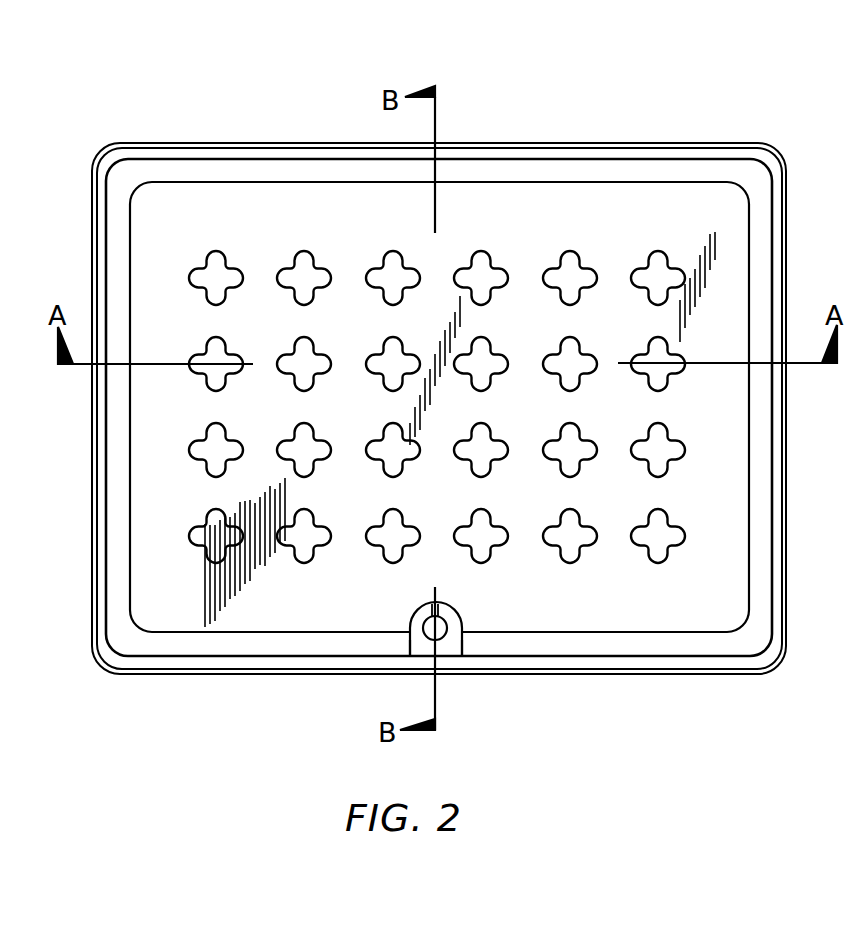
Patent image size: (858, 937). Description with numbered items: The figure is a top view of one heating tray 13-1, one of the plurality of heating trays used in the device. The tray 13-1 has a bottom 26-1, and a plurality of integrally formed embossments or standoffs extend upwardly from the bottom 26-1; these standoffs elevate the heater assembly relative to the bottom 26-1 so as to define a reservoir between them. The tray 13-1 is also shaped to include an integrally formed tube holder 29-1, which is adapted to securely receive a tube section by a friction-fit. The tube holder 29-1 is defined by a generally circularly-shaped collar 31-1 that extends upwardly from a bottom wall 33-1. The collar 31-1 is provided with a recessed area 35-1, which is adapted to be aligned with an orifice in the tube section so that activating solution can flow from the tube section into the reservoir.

The heating tray 13-1 is at (303, 116).
The bottom 26-1 is at (668, 598).
The tube holder 29-1 is at (408, 600).
The collar 31-1 is at (452, 648).
The bottom wall 33-1 is at (424, 625).
The recessed area 35-1 is at (434, 612).